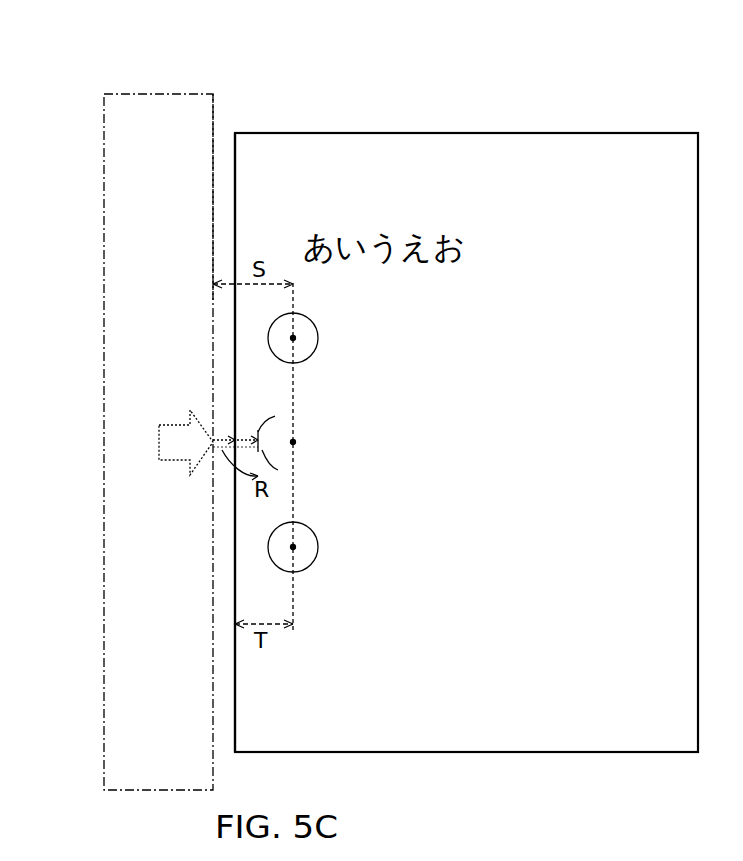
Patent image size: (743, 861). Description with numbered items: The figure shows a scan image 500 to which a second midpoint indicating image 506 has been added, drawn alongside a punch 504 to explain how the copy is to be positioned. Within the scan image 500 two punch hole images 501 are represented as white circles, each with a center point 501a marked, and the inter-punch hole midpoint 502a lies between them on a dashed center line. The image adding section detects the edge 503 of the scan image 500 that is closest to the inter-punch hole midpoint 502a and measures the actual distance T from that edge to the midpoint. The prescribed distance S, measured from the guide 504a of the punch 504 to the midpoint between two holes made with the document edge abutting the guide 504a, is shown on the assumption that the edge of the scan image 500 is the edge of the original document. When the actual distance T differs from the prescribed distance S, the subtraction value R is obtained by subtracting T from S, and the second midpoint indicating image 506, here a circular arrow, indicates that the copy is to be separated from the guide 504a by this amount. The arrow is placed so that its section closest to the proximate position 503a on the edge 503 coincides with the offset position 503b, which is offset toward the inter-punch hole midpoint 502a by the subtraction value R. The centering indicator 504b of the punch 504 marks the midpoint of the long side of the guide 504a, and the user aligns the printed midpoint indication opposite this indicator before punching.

The scan image 500 is at (500, 132).
The punch hole image 501 is at (313, 320).
The hole center 501a is at (296, 340).
The inter-punch hole midpoint 502a is at (296, 444).
The edge 503 is at (236, 197).
The proximate position 503a is at (240, 438).
The offset position 503b is at (258, 434).
The punch 504 is at (106, 84).
The guide 504a is at (213, 113).
The centering indicator 504b is at (158, 440).
The second midpoint indicating image 506 is at (293, 476).